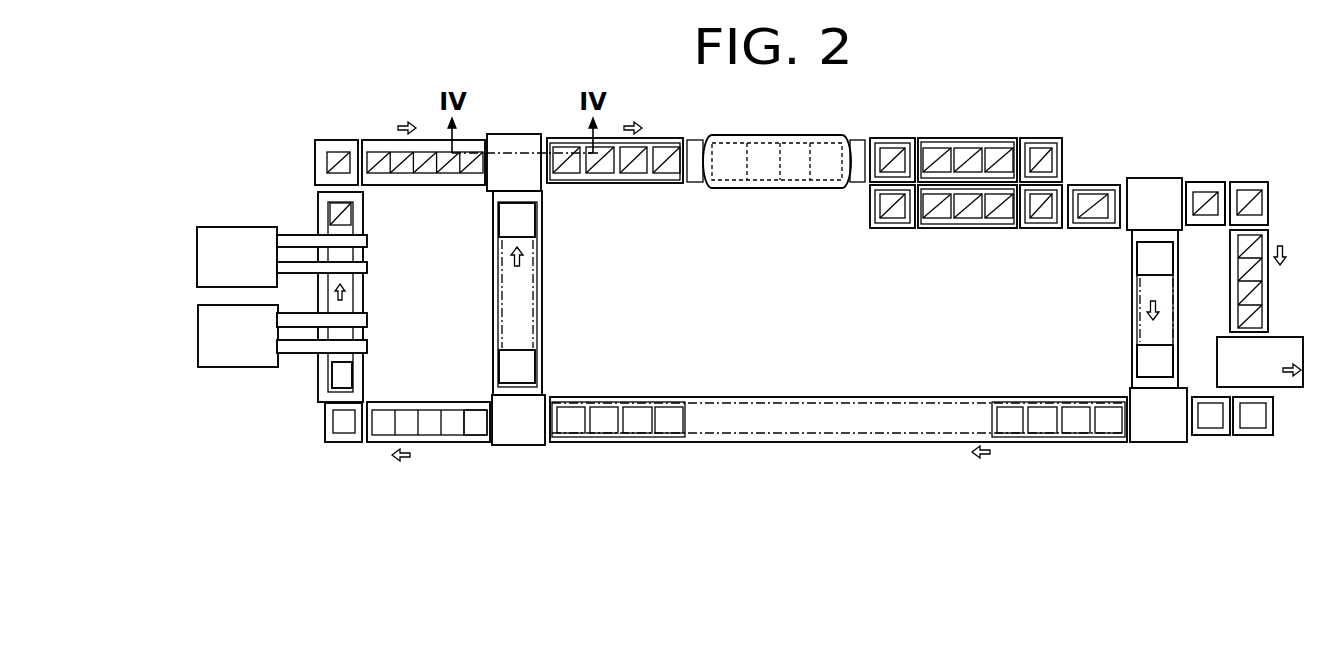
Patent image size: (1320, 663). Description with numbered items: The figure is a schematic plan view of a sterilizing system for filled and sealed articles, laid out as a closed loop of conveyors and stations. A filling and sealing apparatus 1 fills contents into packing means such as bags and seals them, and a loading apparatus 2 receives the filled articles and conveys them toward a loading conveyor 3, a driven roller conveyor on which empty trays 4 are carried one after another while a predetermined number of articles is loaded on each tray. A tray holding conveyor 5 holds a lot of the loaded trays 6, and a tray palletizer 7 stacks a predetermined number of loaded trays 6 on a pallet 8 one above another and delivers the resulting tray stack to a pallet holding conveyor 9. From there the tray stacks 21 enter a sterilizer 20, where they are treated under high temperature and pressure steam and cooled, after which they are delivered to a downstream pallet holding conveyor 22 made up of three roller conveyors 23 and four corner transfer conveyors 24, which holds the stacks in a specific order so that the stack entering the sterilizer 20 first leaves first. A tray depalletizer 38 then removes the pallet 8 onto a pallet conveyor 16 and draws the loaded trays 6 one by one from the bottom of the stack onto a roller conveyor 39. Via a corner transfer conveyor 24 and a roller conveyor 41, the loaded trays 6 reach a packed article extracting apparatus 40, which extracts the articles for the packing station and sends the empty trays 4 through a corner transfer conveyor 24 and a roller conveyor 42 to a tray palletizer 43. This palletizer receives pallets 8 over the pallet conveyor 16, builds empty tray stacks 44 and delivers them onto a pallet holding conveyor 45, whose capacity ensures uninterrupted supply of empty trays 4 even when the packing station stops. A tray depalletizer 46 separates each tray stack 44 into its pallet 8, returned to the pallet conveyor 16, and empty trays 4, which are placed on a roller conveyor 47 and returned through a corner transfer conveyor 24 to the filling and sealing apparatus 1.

The filling and sealing apparatus 1 is at (237, 228).
The loading apparatus 2 is at (295, 236).
The loading conveyor 3 is at (365, 378).
The empty tray 4 is at (333, 375).
The tray holding conveyor 5 is at (372, 140).
The loaded tray 6 is at (425, 148).
The tray palletizer 7 is at (515, 135).
The pallet 8 is at (500, 220).
The pallet holding conveyor 9 is at (606, 147).
The pallet conveyor 16 is at (488, 280).
The sterilizer 20 is at (765, 140).
The tray stack 21 is at (660, 147).
The pallet holding conveyor 22 is at (958, 140).
The roller conveyor 23 is at (993, 145).
The corner transfer conveyor 24 is at (330, 140).
The tray depalletizer 38 is at (1150, 180).
The roller conveyor 39 is at (1213, 188).
The packed article extracting apparatus 40 is at (1287, 340).
The roller conveyor 41 is at (1270, 236).
The roller conveyor 42 is at (1210, 435).
The tray palletizer 43 is at (1158, 440).
The tray stack 44 is at (1108, 443).
The pallet holding conveyor 45 is at (768, 442).
The tray depalletizer 46 is at (523, 445).
The roller conveyor 47 is at (433, 442).